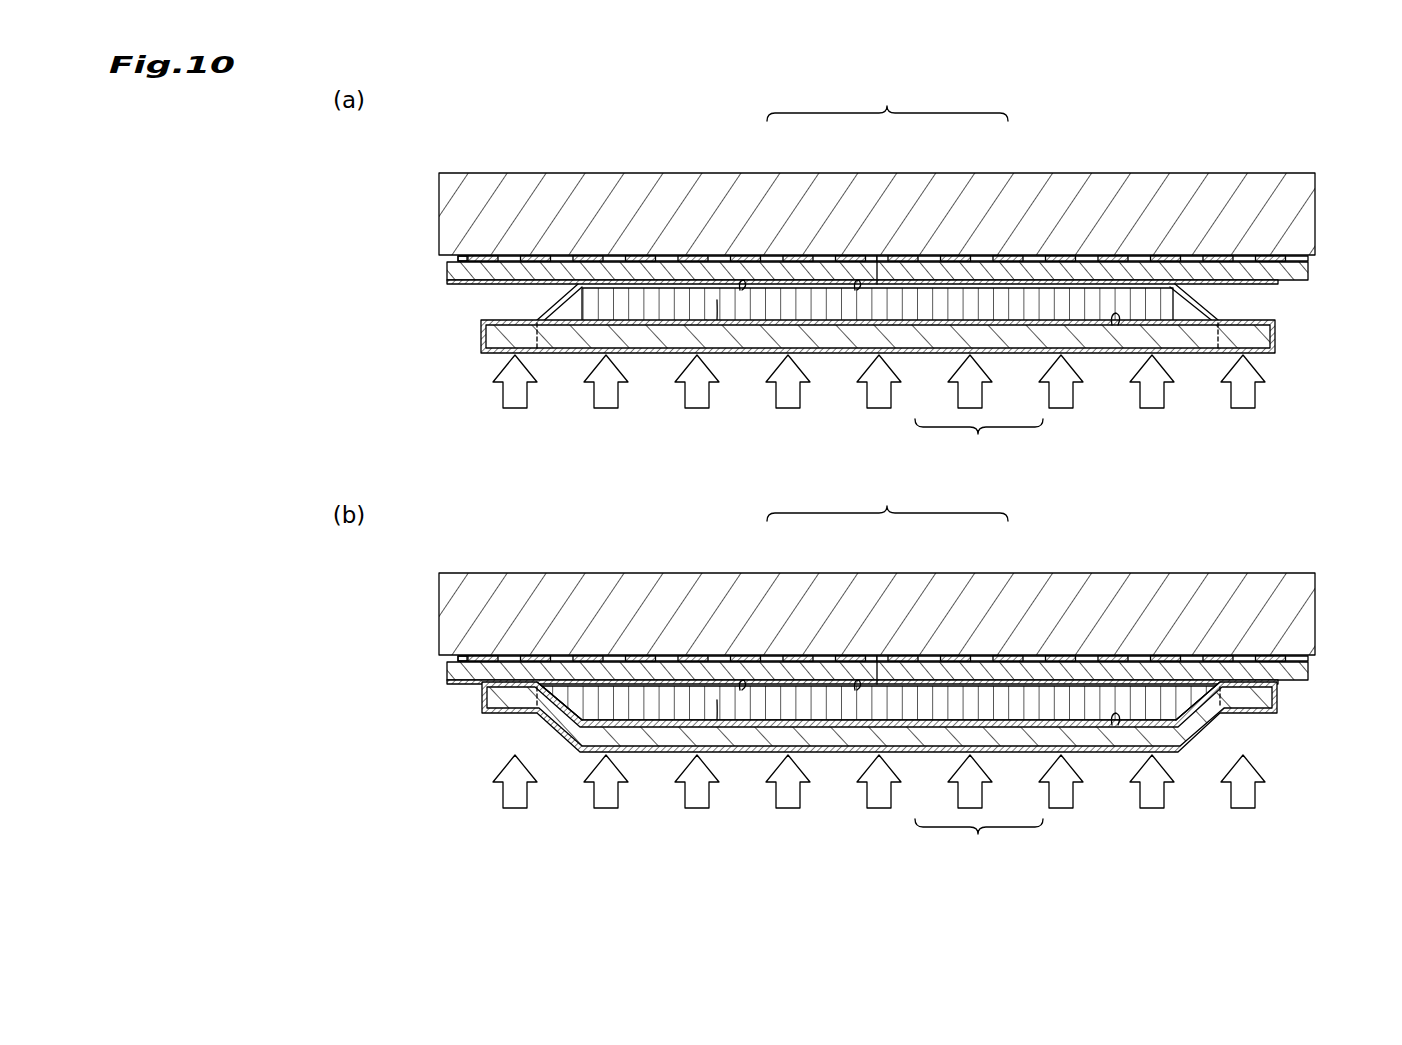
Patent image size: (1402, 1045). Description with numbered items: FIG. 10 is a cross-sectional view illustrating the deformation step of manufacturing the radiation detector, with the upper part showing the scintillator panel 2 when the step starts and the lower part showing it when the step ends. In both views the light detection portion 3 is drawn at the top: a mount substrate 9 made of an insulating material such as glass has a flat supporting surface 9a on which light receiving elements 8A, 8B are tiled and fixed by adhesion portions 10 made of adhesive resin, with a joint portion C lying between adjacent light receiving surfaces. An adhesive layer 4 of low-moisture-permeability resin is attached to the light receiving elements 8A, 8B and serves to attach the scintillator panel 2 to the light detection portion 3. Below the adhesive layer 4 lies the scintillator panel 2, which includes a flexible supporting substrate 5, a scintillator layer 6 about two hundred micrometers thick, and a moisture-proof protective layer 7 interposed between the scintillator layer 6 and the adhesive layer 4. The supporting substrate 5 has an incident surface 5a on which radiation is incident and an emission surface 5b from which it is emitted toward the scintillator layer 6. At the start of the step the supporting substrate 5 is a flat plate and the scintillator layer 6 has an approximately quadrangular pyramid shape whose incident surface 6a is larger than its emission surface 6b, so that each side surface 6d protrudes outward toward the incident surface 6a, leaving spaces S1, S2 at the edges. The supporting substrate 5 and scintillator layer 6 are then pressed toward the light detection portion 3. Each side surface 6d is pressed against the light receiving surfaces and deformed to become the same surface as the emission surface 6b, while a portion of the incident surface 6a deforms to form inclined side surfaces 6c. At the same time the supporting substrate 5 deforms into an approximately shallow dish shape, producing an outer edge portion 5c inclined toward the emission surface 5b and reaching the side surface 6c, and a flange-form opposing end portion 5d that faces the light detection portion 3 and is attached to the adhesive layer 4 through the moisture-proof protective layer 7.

The scintillator panel 2 is at (979, 638).
The light detection portion 3 is at (887, 302).
The adhesive layer 4 is at (1300, 283).
The supporting substrate 5 is at (930, 323).
The incident surface 5a is at (572, 348).
The emission surface 5b is at (1113, 325).
The outer edge portion 5c is at (556, 708).
The opposing end portion 5d is at (505, 340).
The scintillator layer 6 is at (1005, 312).
The incident surface 6a is at (706, 320).
The emission surface 6b is at (740, 290).
The side surface 6c is at (558, 712).
The side surface 6d is at (560, 297).
The moisture-proof protective layer 7 is at (1033, 352).
The light receiving element 8A is at (983, 257).
The light receiving element 8B is at (773, 257).
The mount substrate 9 is at (912, 180).
The supporting surface 9a is at (458, 256).
The adhesion portion 10 is at (843, 253).
The joint portion C is at (855, 290).
The first space S1 is at (1278, 333).
The second space S2 is at (483, 331).